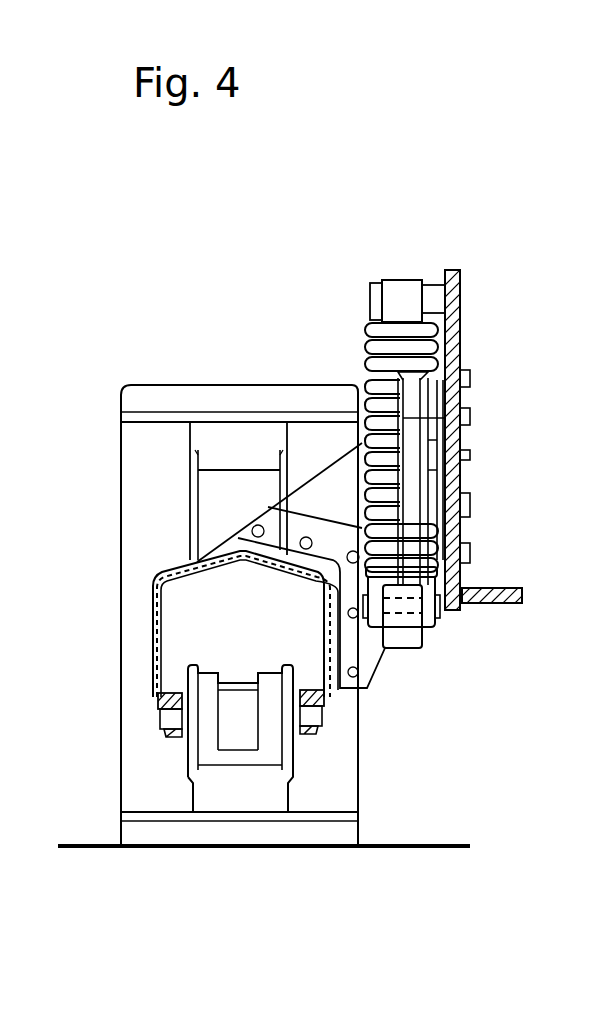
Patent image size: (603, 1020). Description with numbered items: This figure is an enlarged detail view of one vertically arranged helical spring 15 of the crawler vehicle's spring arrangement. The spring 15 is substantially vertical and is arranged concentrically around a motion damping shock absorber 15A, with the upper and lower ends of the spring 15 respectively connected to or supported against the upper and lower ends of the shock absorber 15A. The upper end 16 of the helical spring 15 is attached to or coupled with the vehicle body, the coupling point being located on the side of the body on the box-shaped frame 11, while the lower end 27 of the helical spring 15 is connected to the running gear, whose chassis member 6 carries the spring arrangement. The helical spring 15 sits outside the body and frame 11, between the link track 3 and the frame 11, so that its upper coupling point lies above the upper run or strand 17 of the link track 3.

The link track 3 is at (168, 378).
The chassis member 6 is at (153, 640).
The frame 11 is at (497, 588).
The helical spring 15 is at (365, 380).
The motion damping shock absorber 15A is at (440, 312).
The upper end of the helical spring 16 is at (367, 340).
The upper run or strand of the link track 17 is at (113, 388).
The lower end of the helical spring 27 is at (430, 557).